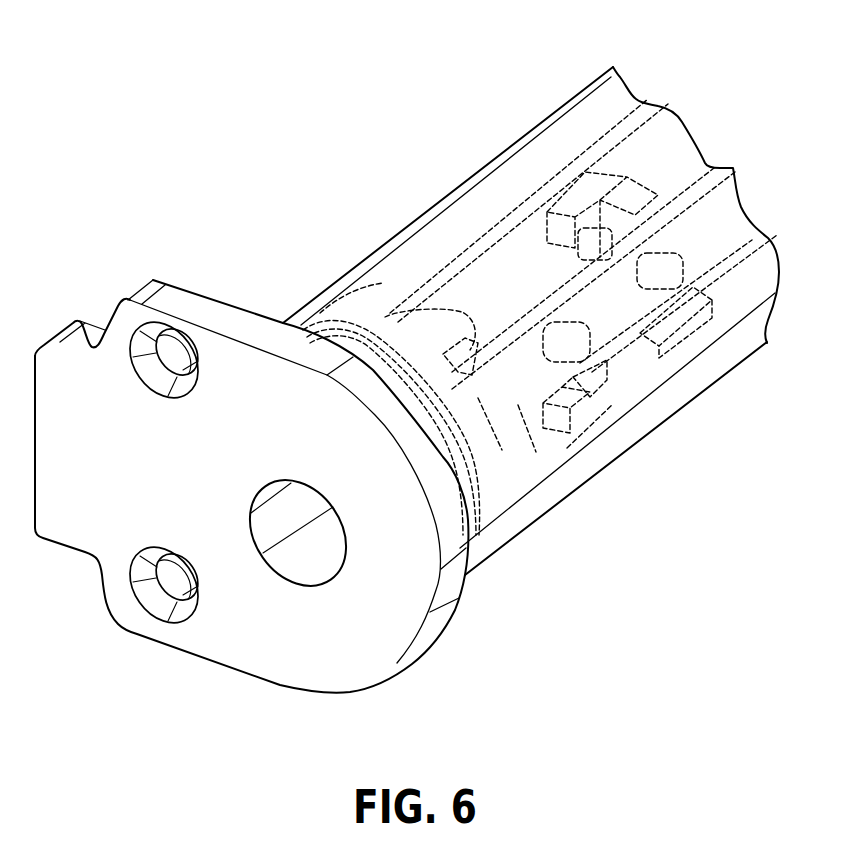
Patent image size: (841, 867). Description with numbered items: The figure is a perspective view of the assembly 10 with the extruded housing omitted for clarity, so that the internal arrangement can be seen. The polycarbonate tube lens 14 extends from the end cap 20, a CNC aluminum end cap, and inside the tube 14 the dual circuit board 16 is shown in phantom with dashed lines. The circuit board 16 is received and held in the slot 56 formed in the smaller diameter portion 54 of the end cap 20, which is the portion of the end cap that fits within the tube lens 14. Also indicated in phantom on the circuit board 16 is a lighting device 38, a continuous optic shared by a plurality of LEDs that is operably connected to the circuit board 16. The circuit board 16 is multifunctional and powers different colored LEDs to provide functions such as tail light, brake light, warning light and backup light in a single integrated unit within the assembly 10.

The assembly 10 is at (212, 76).
The polycarbonate tube lens 14 is at (541, 143).
The dual circuit board assembly 16 is at (490, 230).
The second CNC aluminum end cap 20 is at (477, 608).
The lighting device 38 is at (633, 298).
The smaller diameter portion 54 is at (500, 490).
The slot 56 is at (387, 306).